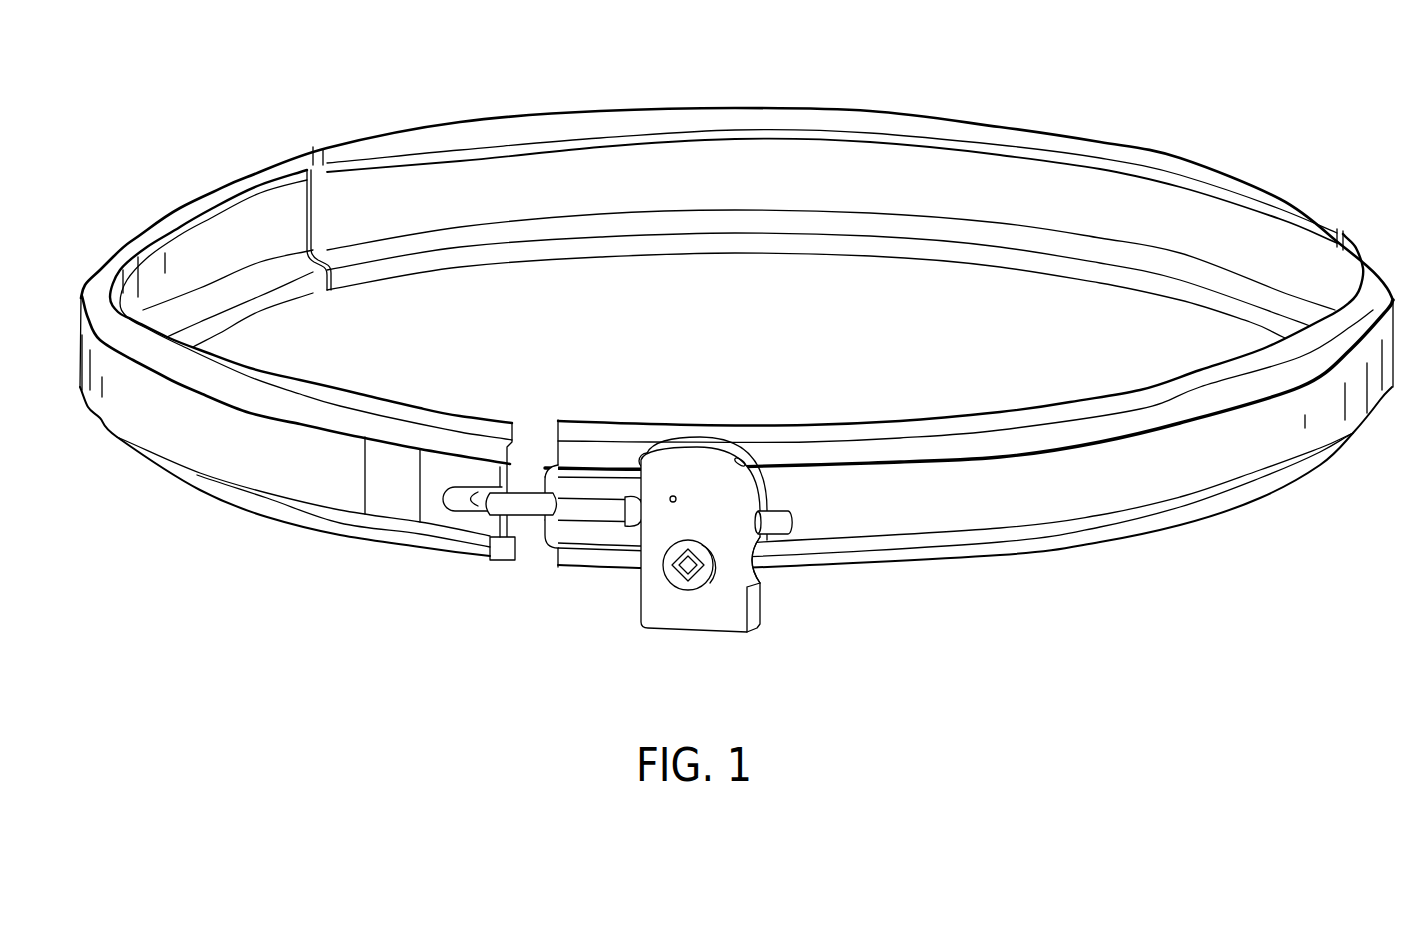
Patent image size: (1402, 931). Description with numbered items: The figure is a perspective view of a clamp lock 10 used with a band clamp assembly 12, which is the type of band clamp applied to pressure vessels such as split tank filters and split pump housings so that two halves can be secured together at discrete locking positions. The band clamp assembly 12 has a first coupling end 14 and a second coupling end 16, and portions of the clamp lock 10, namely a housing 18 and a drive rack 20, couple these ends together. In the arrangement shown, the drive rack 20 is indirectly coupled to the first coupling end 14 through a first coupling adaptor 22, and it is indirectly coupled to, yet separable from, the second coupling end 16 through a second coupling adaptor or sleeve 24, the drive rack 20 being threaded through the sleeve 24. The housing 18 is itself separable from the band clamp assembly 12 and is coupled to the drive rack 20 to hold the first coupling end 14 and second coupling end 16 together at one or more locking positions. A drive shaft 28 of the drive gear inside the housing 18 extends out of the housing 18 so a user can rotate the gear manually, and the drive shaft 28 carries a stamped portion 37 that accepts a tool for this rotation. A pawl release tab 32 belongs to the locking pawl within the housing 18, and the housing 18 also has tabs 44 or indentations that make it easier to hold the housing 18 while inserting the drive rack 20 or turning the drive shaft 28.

The clamp lock 10 is at (609, 596).
The band clamp assembly 12 is at (1058, 105).
The first coupling end 14 is at (483, 413).
The second coupling end 16 is at (583, 418).
The housing 18 is at (752, 628).
The drive rack 20 is at (787, 540).
The first coupling adaptor 22 is at (489, 538).
The sleeve 24 is at (557, 540).
The drive shaft 28 is at (713, 562).
The pawl release tab 32 is at (636, 463).
The stamped portion 37 is at (665, 584).
The tabs 44 is at (760, 574).